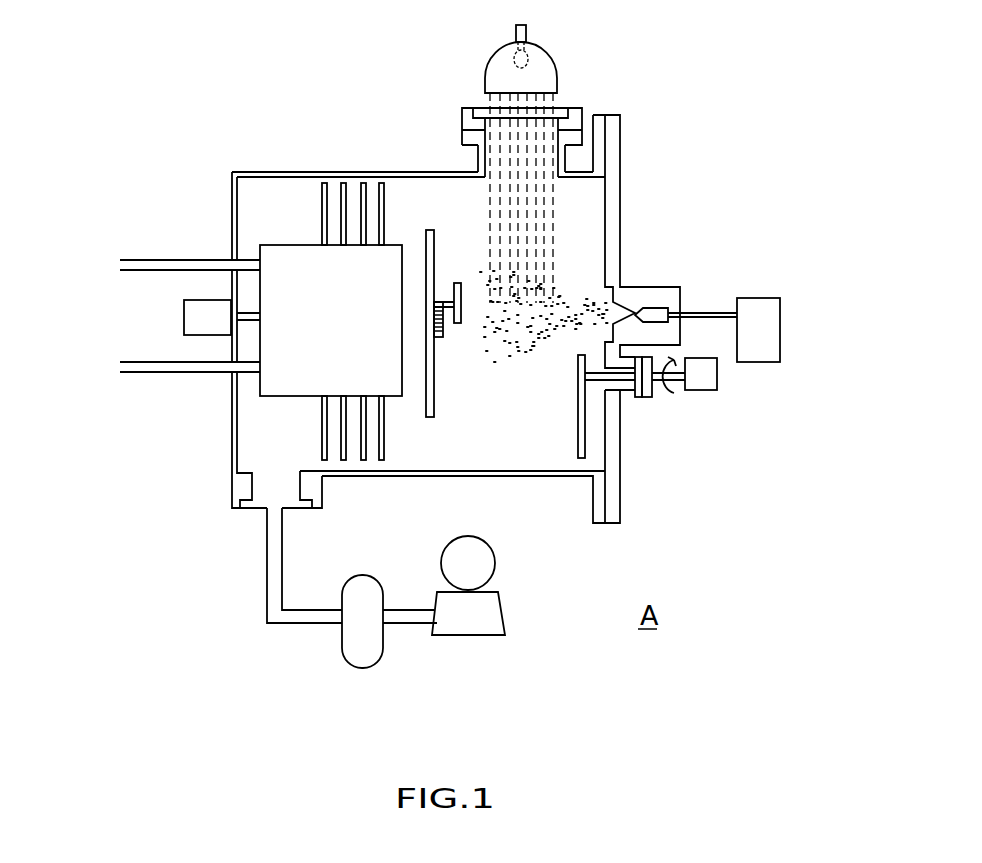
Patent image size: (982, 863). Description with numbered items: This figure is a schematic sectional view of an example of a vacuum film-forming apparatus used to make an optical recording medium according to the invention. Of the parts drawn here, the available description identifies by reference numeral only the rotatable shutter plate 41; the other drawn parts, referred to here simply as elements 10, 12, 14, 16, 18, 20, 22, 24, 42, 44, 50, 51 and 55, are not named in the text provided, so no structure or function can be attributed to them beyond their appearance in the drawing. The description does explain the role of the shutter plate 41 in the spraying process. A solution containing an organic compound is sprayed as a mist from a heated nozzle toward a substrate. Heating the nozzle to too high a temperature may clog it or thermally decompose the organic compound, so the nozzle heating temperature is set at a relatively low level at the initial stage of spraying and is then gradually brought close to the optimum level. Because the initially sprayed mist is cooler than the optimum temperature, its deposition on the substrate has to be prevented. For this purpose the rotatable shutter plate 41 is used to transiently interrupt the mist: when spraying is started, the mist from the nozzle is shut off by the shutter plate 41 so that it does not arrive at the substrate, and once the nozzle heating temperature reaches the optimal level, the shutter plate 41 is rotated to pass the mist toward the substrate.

The vacuum chamber 10 is at (448, 476).
The target plate 12 is at (431, 230).
The grid electrode 14 is at (457, 283).
The nozzle 16 is at (657, 307).
The detector 18 is at (780, 327).
The ion source block 20 is at (290, 245).
The trap tank 22 is at (365, 668).
The vacuum pump 24 is at (465, 635).
The rotatable shutter plate 41 is at (578, 425).
The motor 42 is at (700, 390).
The particle spray 44 is at (507, 353).
The lamp 50 is at (527, 25).
The window flange 51 is at (572, 108).
The light beam 55 is at (542, 215).